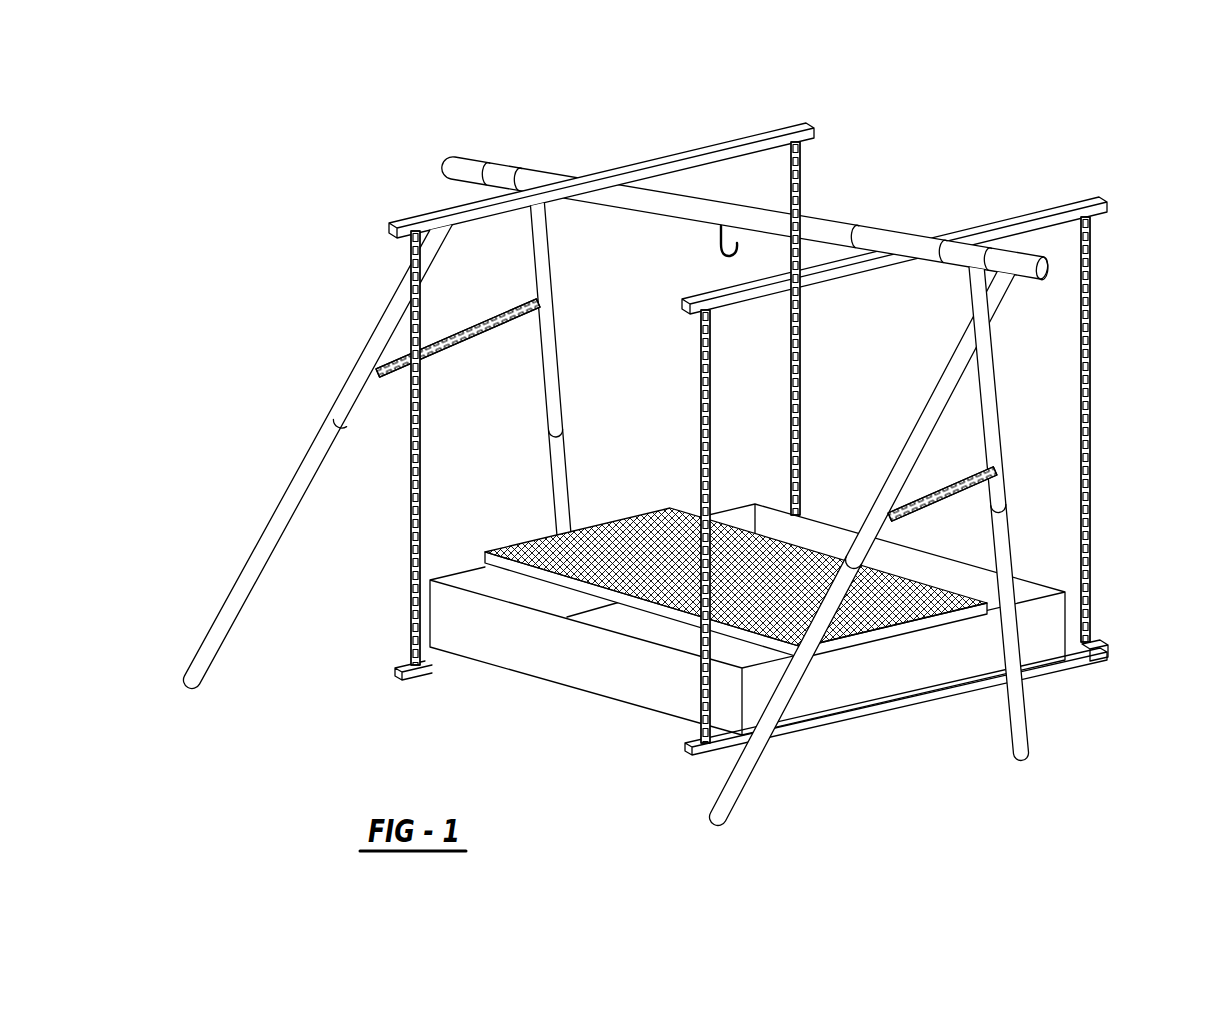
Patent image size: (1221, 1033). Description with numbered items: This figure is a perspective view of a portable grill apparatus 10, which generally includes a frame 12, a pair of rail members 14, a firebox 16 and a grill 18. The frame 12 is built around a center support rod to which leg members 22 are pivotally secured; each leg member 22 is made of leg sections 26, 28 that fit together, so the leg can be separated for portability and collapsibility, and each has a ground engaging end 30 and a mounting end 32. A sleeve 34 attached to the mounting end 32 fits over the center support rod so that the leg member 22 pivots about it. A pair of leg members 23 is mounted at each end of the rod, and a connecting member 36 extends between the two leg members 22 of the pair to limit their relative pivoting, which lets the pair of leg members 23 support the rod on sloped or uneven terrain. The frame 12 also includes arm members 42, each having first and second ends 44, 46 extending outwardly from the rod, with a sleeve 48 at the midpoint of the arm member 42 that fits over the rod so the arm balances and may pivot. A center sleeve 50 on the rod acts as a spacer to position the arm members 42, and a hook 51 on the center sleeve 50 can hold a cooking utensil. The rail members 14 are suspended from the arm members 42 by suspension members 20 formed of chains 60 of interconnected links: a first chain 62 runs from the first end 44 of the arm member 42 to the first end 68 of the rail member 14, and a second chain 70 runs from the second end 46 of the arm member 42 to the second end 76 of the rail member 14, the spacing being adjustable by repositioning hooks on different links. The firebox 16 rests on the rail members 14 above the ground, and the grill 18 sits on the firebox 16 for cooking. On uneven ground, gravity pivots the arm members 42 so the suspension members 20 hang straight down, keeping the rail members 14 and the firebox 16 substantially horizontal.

The portable grill apparatus 10 is at (679, 484).
The frame 12 is at (745, 237).
The rail member 14 is at (792, 754).
The firebox 16 is at (568, 650).
The grill 18 is at (920, 622).
The suspension member 20 is at (758, 461).
The leg member 22 is at (647, 521).
The pair of leg members 23 is at (537, 258).
The leg section 26 is at (637, 521).
The leg section 28 is at (637, 521).
The ground engaging end 30 is at (644, 521).
The mounting end 32 is at (614, 492).
The sleeve 34 is at (749, 185).
The connecting member 36 is at (505, 328).
The arm member 42 is at (745, 237).
The first end 44 is at (745, 199).
The second end 46 is at (792, 199).
The sleeve 48 is at (553, 176).
The center sleeve 50 is at (749, 185).
The hook 51 is at (718, 253).
The chain 60 is at (759, 461).
The first chain 62 is at (787, 442).
The first end 68 is at (798, 739).
The second chain 70 is at (1097, 343).
The second end 76 is at (1108, 647).